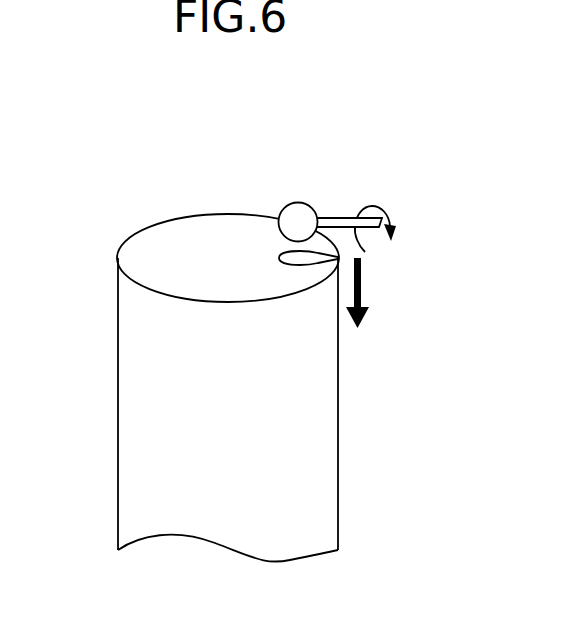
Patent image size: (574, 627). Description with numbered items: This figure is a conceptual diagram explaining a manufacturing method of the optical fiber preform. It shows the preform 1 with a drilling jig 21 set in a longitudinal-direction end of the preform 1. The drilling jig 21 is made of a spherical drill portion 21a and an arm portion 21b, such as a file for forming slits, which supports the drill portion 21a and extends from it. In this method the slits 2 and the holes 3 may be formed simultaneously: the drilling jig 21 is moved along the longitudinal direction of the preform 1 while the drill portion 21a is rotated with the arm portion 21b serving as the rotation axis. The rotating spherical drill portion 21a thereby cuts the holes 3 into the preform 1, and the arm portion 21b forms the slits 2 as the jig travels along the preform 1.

The preform 1 is at (118, 372).
The slits 2 is at (360, 284).
The holes 3 is at (304, 266).
The drilling jig 21 is at (339, 176).
The spherical drill portion 21a is at (300, 203).
The arm portion 21b is at (336, 217).